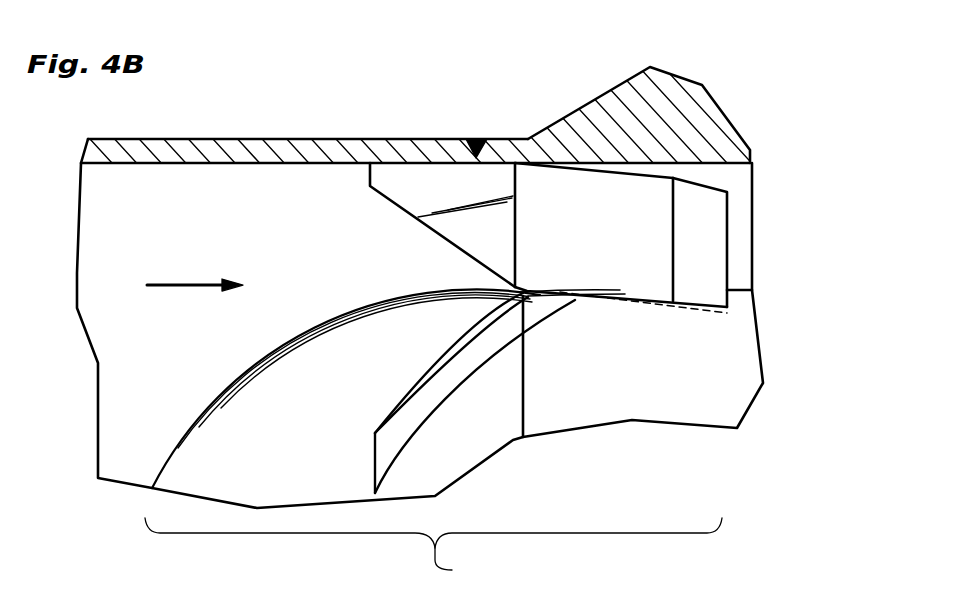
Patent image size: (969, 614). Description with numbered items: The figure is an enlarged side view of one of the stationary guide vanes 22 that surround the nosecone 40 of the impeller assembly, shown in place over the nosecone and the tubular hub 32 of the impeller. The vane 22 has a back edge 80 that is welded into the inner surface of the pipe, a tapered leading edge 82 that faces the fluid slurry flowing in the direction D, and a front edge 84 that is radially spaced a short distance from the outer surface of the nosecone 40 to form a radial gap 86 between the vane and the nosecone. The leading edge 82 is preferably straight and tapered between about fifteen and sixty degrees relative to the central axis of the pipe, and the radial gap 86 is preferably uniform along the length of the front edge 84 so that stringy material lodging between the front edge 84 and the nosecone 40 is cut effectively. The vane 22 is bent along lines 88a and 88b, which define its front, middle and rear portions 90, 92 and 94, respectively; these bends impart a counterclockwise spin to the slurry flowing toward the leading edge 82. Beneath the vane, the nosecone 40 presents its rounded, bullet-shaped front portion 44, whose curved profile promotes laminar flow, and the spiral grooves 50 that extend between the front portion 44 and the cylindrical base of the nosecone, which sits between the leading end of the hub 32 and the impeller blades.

The stationary guide vane 22 is at (318, 220).
The front portion 90 is at (402, 175).
The back edge 80 is at (587, 183).
The middle portion 92 is at (623, 202).
The bend line 88a is at (515, 183).
The tapered leading edge 82 is at (437, 232).
The bend line 88b is at (673, 245).
The rear portion 94 is at (712, 236).
The front portion of nosecone 44 is at (218, 393).
The spiral grooves 50 is at (413, 395).
The radial gap 86 is at (523, 290).
The front edge 84 is at (630, 298).
The tubular hub 32 is at (598, 390).
The nosecone 40 is at (433, 551).
The flow direction D is at (190, 287).